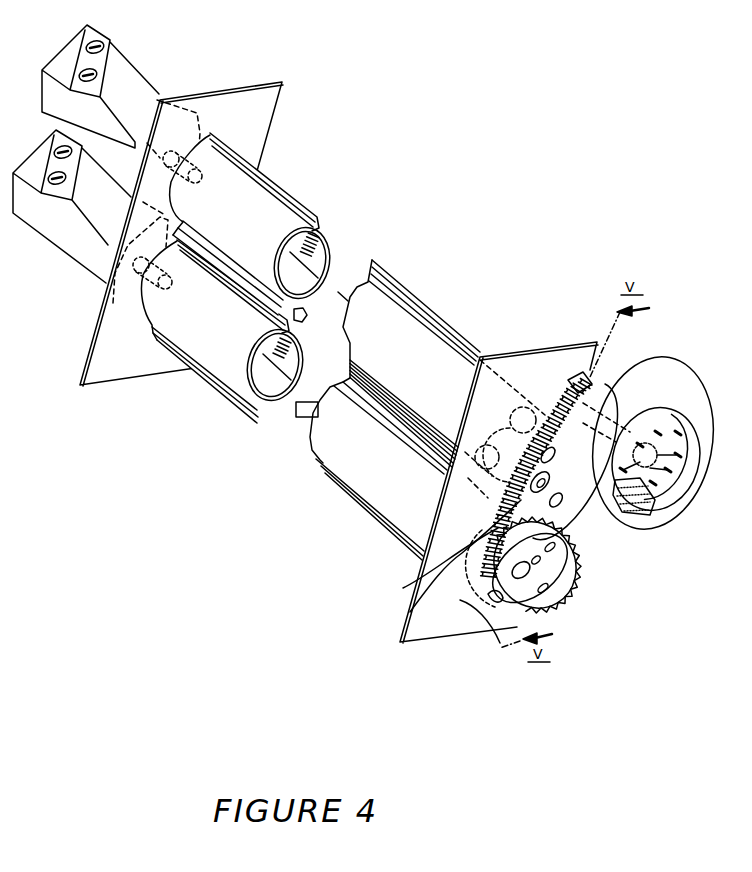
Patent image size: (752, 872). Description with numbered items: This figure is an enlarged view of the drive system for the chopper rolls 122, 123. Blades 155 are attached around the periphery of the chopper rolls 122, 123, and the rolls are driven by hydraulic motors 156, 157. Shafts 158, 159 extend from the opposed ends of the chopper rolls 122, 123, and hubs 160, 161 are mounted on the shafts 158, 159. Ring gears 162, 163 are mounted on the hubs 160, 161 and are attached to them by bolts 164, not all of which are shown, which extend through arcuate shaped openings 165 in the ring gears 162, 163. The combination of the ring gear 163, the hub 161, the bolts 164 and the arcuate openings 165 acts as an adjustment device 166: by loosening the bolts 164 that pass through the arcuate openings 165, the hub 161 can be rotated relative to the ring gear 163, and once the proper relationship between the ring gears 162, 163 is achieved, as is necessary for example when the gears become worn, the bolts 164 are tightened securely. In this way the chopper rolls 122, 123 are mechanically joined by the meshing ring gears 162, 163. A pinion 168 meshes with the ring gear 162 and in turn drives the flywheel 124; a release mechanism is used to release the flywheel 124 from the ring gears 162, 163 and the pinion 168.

The chopper roll 122 is at (325, 258).
The chopper roll 123 is at (292, 383).
The flywheel 124 is at (668, 383).
The blades 155 is at (293, 193).
The hydraulic motor 156 is at (137, 80).
The hydraulic motor 157 is at (85, 257).
The shaft 158 is at (517, 432).
The shaft 159 is at (410, 611).
The hub 160 is at (559, 440).
The hub 161 is at (500, 645).
The ring gear 162 is at (438, 564).
The ring gear 163 is at (563, 577).
The bolts 164 is at (562, 502).
The arcuate shaped openings 165 is at (573, 563).
The adjustment device 166 is at (488, 594).
The pinion 168 is at (568, 377).